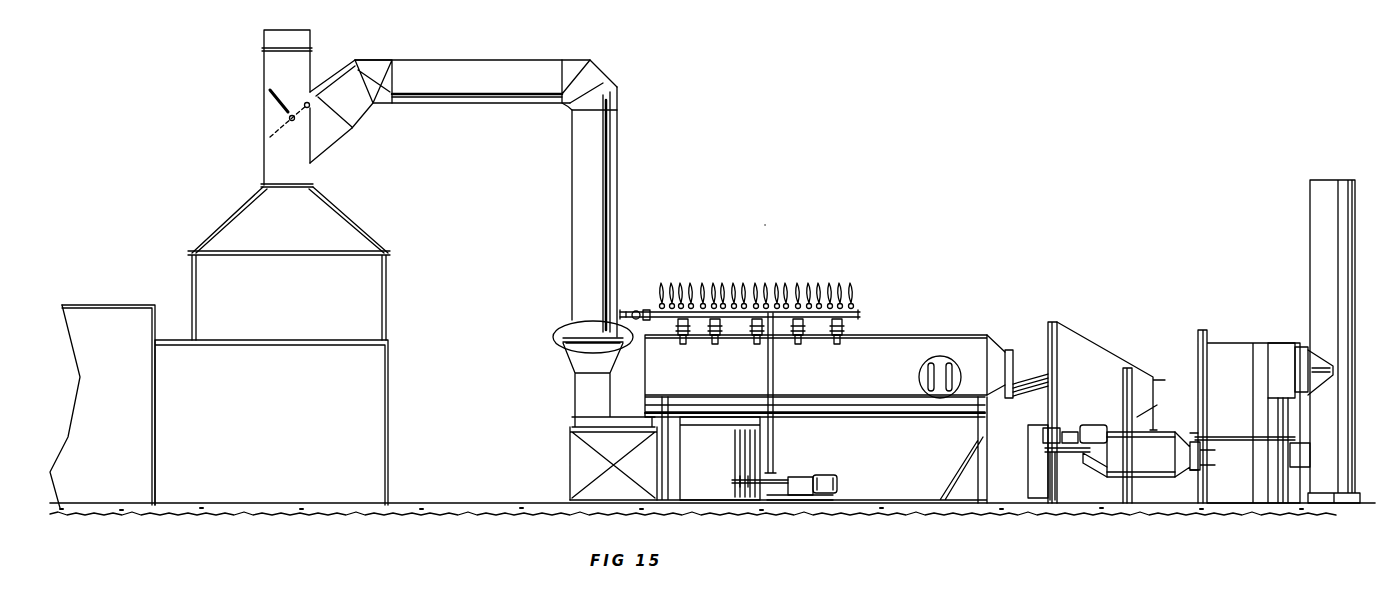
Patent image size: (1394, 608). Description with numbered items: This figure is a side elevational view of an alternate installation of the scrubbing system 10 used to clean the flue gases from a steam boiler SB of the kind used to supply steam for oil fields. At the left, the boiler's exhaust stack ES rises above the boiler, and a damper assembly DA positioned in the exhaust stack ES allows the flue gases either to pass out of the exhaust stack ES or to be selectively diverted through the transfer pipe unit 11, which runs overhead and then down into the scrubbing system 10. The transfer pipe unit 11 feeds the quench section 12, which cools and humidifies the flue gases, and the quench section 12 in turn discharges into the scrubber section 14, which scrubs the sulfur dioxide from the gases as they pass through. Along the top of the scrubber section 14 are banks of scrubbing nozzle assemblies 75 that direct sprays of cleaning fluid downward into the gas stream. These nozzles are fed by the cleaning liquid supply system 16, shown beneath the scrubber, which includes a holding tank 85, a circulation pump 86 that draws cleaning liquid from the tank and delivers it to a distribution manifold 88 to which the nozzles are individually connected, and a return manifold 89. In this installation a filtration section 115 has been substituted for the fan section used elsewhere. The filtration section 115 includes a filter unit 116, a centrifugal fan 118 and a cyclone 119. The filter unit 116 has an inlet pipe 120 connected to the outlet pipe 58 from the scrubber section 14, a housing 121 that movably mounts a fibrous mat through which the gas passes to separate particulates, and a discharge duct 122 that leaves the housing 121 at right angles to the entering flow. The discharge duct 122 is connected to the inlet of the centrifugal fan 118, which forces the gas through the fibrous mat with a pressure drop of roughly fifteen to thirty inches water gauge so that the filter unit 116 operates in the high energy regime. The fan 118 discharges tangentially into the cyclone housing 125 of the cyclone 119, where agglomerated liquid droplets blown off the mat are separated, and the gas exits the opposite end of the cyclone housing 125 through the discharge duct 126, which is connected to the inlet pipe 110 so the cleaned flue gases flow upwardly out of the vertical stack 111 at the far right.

The scrubbing system 10 is at (767, 224).
The transfer pipe unit 11 is at (497, 63).
The quench section 12 is at (573, 393).
The scrubber section 14 is at (912, 334).
The cleaning liquid supply system 16 is at (790, 475).
The outlet pipe 58 is at (1008, 399).
The scrubbing nozzle assemblies 75 is at (716, 341).
The holding tank 85 is at (720, 458).
The circulation pump 86 is at (822, 480).
The distribution manifold 88 is at (857, 309).
The return manifold 89 is at (836, 423).
The inlet pipe 110 is at (1330, 372).
The vertical stack 111 is at (1318, 223).
The filtration section 115 is at (1166, 311).
The filter unit 116 is at (1113, 331).
The centrifugal fan 118 is at (1236, 607).
The cyclone 119 is at (1228, 336).
The inlet pipe 120 is at (1030, 354).
The housing 121 is at (1103, 361).
The discharge duct 122 is at (1160, 438).
The cyclone housing 125 is at (1265, 360).
The discharge duct 126 is at (1300, 343).
The exhaust stack ES is at (270, 68).
The damper assembly DA is at (278, 110).
The steam boiler SB is at (176, 301).